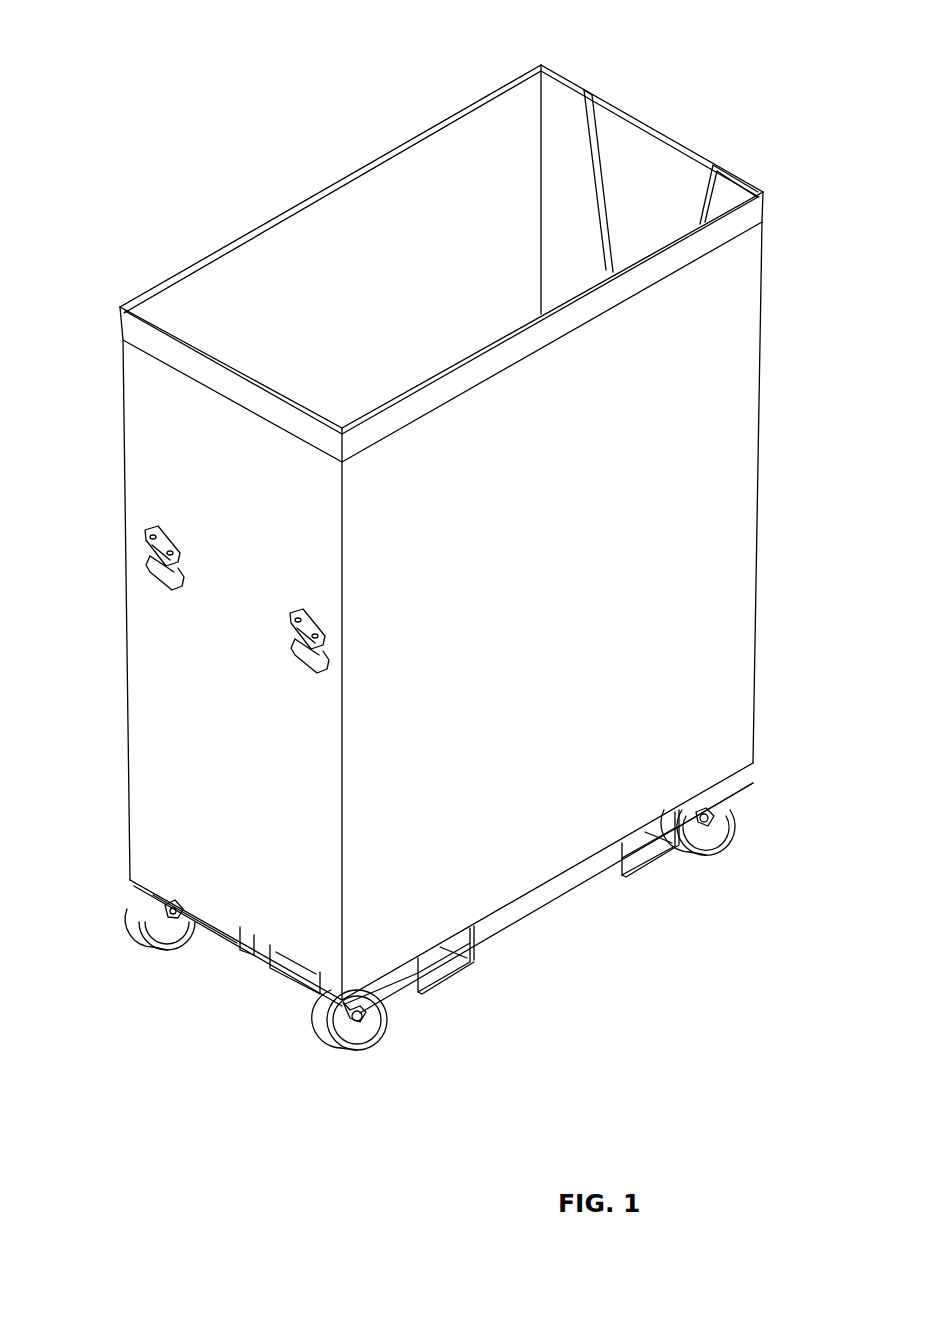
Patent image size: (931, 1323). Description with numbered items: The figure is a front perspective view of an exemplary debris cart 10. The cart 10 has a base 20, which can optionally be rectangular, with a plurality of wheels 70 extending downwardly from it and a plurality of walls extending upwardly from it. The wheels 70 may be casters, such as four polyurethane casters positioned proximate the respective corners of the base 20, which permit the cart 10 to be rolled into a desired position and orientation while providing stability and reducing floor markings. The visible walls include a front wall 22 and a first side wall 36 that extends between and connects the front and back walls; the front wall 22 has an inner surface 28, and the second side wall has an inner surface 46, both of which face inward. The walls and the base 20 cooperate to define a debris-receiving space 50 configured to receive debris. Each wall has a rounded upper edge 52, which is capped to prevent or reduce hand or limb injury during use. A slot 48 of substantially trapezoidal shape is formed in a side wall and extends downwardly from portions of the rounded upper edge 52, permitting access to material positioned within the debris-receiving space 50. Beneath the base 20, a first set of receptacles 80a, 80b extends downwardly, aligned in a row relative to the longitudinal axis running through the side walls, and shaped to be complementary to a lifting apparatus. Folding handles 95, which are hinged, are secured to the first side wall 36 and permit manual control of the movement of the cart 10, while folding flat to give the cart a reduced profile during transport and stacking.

The cart 10 is at (121, 112).
The base 20 is at (540, 893).
The front wall 22 is at (733, 380).
The inner surface 28 is at (422, 160).
The first side wall 36 is at (142, 468).
The inner surface 46 is at (560, 102).
The slot 48 is at (720, 158).
The debris-receiving space 50 is at (359, 243).
The rounded upper edge 52 is at (235, 238).
The wheels 70 is at (148, 950).
The receptacle 80a is at (440, 980).
The receptacle 80b is at (645, 860).
The folding handles 95 is at (143, 578).